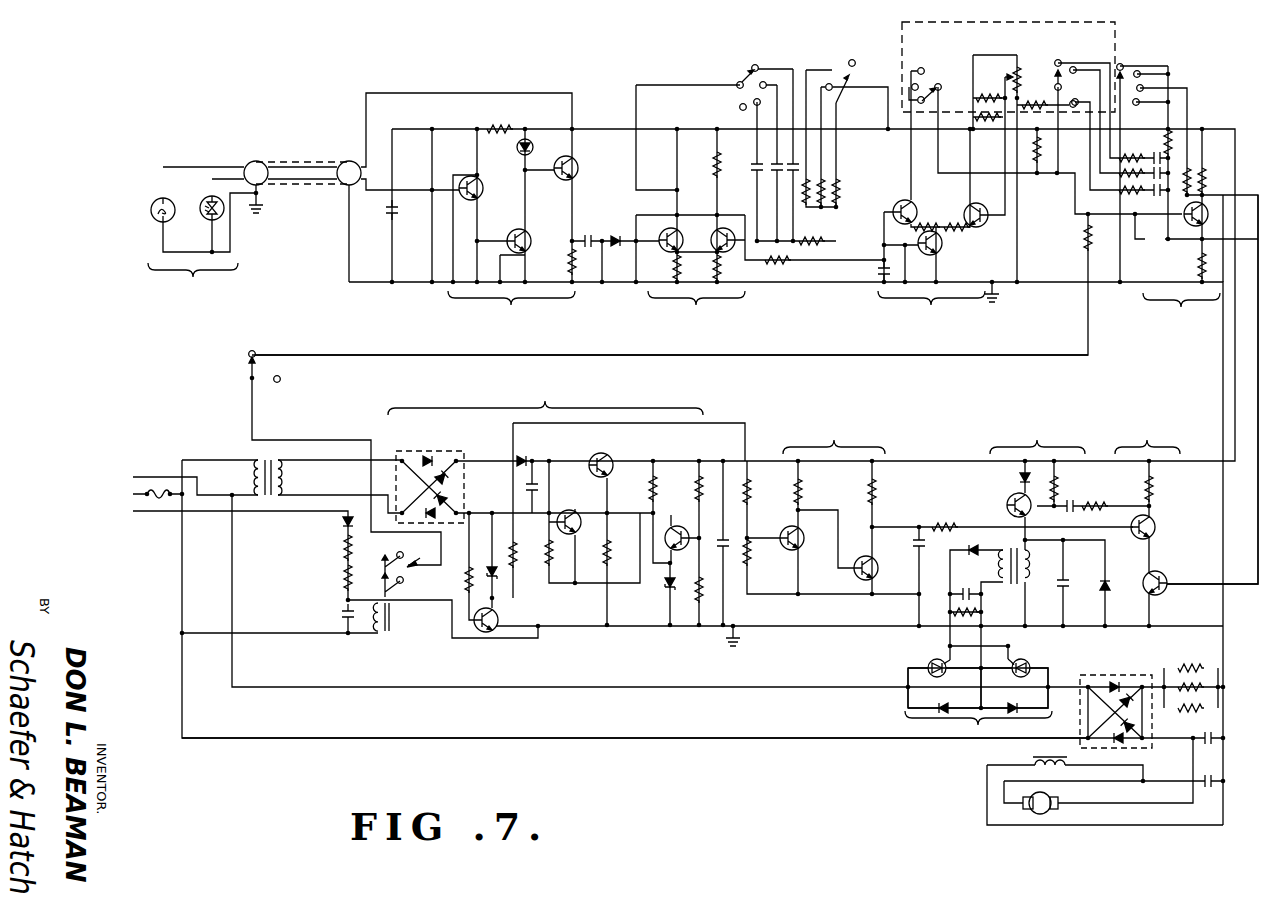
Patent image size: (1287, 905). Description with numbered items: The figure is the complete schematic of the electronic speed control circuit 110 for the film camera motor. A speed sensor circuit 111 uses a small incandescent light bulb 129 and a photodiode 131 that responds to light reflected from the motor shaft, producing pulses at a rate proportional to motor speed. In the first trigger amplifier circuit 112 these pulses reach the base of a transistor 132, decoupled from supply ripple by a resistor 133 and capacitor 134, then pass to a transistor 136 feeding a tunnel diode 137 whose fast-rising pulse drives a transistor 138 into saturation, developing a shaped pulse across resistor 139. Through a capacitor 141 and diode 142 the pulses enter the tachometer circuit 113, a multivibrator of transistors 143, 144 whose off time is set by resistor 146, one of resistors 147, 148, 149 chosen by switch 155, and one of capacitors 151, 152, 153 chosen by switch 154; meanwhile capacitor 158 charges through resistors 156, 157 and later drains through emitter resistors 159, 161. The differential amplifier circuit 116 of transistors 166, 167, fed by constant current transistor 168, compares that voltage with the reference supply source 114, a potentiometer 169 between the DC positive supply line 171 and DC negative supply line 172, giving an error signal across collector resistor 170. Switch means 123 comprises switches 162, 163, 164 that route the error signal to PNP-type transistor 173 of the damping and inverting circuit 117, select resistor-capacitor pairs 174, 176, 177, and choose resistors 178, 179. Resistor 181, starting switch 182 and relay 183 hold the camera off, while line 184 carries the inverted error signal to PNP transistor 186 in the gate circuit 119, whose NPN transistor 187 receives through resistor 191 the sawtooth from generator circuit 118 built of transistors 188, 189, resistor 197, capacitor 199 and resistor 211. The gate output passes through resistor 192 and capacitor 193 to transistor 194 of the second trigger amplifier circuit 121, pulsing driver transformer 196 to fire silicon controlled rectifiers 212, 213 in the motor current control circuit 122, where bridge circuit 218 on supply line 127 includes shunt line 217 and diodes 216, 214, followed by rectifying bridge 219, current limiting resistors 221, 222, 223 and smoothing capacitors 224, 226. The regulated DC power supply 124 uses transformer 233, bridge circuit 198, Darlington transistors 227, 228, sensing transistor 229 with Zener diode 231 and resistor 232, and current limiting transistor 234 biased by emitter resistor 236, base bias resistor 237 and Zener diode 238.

The electronic speed control circuit 110 is at (85, 322).
The speed sensor circuit 111 is at (193, 284).
The first trigger amplifier circuit 112 is at (511, 311).
The tachometer circuit 113 is at (696, 311).
The reference supply source 114 is at (1013, 75).
The differential amplifier circuit 116 is at (931, 311).
The damping and inverting circuit 117 is at (1181, 313).
The sawtooth wave generator circuit 118 is at (834, 436).
The gate circuit 119 is at (1147, 436).
The second trigger amplifier circuit 121 is at (1037, 436).
The motor current control circuit 122 is at (978, 730).
The switch means 123 is at (1116, 56).
The regulated DC power supply 124 is at (545, 398).
The alternating current supply line 127 is at (692, 736).
The incandescent light bulb 129 is at (151, 206).
The photodiode 131 is at (208, 197).
The transistor 132 is at (483, 191).
The resistor 133 is at (505, 122).
The capacitor 134 is at (390, 214).
The transistor 136 is at (513, 233).
The tunnel diode 137 is at (517, 147).
The transistor 138 is at (577, 165).
The resistor 139 is at (570, 262).
The capacitor 141 is at (588, 236).
The diode 142 is at (614, 237).
The transistor 143 is at (679, 240).
The transistor 144 is at (724, 262).
The resistor 146 is at (814, 244).
The resistor 147 is at (838, 199).
The resistor 148 is at (825, 191).
The resistor 149 is at (810, 186).
The capacitor 151 is at (797, 200).
The capacitor 152 is at (757, 178).
The capacitor 153 is at (776, 172).
The switch 154 is at (746, 70).
The switch 155 is at (850, 72).
The resistor 156 is at (721, 166).
The resistor 157 is at (782, 264).
The capacitor 158 is at (880, 272).
The emitter resistor 159 is at (714, 268).
The emitter resistor 161 is at (674, 268).
The switch 162 is at (930, 78).
The switch 163 is at (1058, 60).
The switch 164 is at (1122, 92).
The transistor 166 is at (915, 210).
The transistor 167 is at (974, 228).
The transistor 168 is at (941, 252).
The potentiometer 169 is at (1021, 88).
The collector resistor 170 is at (1052, 155).
The DC positive supply line 171 is at (1216, 128).
The DC negative supply line 172 is at (1122, 283).
The PNP-type transistor 173 is at (1208, 212).
The resistor-capacitor pair 174 is at (1142, 156).
The resistor-capacitor pair 176 is at (1127, 178).
The resistor-capacitor pair 177 is at (1140, 193).
The resistor 178 is at (1190, 182).
The resistor 179 is at (1172, 142).
The resistor 181 is at (1084, 234).
The switch 182 is at (248, 378).
The relay 183 is at (420, 554).
The line 184 is at (1240, 586).
The PNP transistor 186 is at (1162, 579).
The NPN transistor 187 is at (1154, 526).
The transistor 188 is at (798, 553).
The transistor 189 is at (879, 573).
The resistor 191 is at (952, 512).
The resistor 192 is at (1092, 504).
The capacitor 193 is at (1071, 500).
The transistor 194 is at (1010, 505).
The driver transformer 196 is at (1024, 565).
The resistor 197 is at (750, 496).
The bridge circuit 198 is at (467, 506).
The capacitor 199 is at (915, 541).
The resistor 211 is at (876, 492).
The silicon controlled rectifier 212 is at (933, 660).
The silicon controlled rectifier 213 is at (1028, 668).
The diode 214 is at (1018, 694).
The diode 216 is at (946, 706).
The shunt line 217 is at (983, 698).
The bridge circuit 218 is at (907, 668).
The full wave rectifying bridge 219 is at (1128, 678).
The current limiting resistor 221 is at (1193, 666).
The current limiting resistor 222 is at (1200, 688).
The current limiting resistor 223 is at (1202, 714).
The capacitor 224 is at (1214, 746).
The capacitor 226 is at (1216, 788).
The transistor 227 is at (578, 510).
The transistor 228 is at (608, 456).
The sensing transistor 229 is at (683, 525).
The Zener diode 231 is at (668, 588).
The resistor 232 is at (697, 486).
The transformer 233 is at (283, 477).
The current limiting transistor 234 is at (500, 618).
The emitter resistor 236 is at (466, 582).
The base bias resistor 237 is at (515, 552).
The Zener diode 238 is at (496, 576).